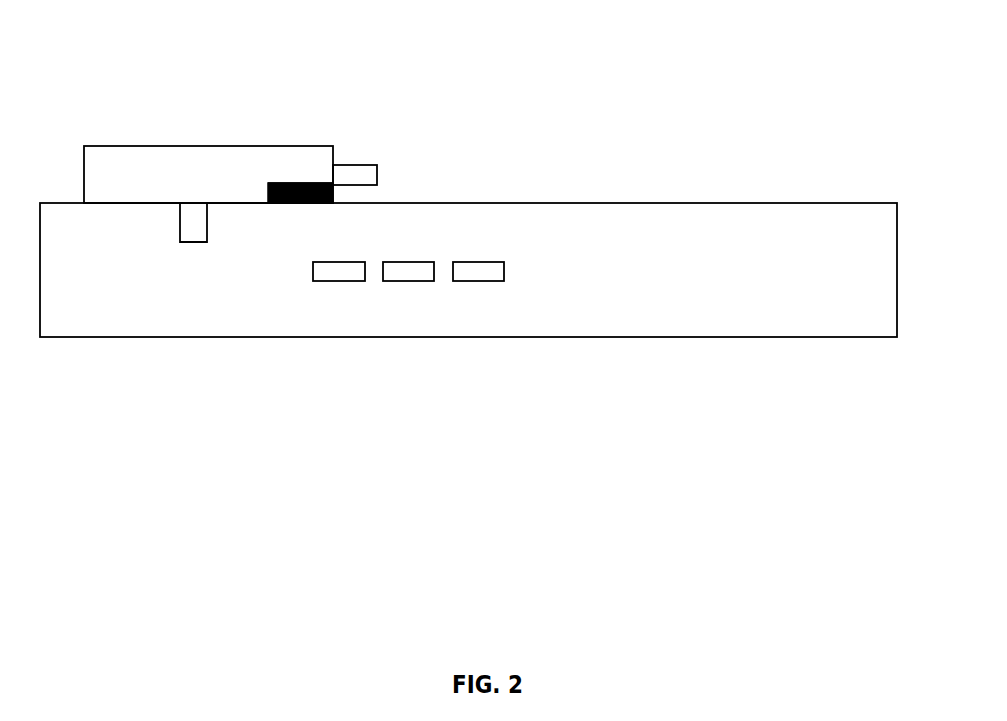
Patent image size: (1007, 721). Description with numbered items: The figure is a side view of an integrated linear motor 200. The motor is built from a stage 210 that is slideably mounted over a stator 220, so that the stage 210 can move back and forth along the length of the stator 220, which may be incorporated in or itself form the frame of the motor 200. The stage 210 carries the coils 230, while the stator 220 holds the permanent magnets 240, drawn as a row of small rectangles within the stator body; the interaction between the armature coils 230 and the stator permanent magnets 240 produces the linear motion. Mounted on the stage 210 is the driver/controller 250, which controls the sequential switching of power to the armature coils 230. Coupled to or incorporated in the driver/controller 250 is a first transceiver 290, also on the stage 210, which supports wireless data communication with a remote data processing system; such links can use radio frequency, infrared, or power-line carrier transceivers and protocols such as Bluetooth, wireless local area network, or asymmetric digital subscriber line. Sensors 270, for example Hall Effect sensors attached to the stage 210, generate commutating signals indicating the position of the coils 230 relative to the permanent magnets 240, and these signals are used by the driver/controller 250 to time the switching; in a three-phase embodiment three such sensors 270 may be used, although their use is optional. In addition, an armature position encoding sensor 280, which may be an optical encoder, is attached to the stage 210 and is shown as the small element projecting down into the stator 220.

The integrated linear motor 200 is at (719, 47).
The stage 210 is at (307, 167).
The stator 220 is at (695, 298).
The coils 230 is at (110, 165).
The permanent magnets 240 is at (484, 281).
The driver/controller 250 is at (283, 185).
The sensors 270 is at (375, 183).
The armature position encoding sensor 280 is at (200, 223).
The first transceiver 290 is at (287, 185).